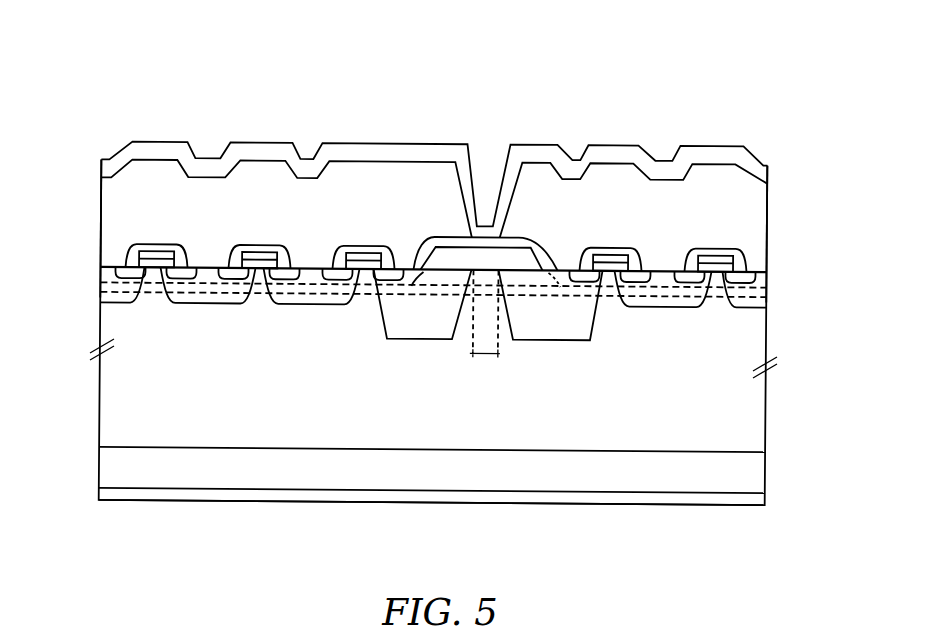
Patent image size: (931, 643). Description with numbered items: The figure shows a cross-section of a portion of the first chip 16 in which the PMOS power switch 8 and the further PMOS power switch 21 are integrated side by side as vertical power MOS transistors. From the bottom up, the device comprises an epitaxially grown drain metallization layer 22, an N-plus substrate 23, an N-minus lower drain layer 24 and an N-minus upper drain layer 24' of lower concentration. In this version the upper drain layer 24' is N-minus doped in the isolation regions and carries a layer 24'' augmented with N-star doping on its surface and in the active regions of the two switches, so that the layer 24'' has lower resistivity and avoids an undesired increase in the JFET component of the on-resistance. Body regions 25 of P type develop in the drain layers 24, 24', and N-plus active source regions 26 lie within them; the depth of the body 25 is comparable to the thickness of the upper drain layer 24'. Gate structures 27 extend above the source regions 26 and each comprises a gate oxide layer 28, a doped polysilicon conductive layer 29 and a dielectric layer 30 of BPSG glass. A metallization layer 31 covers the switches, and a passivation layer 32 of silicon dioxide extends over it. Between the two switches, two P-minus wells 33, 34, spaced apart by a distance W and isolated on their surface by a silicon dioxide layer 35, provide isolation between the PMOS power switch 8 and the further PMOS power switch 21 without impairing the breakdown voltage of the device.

The PMOS power switch 8 is at (278, 104).
The first chip 16 is at (778, 428).
The further PMOS power switch 21 is at (628, 96).
The drain metallization layer 22 is at (467, 500).
The substrate 23 is at (410, 488).
The lower drain layer 24 is at (475, 338).
The upper drain layer 24' is at (433, 318).
The augmented layer 24'' is at (395, 264).
The body region 25 is at (207, 303).
The active source region 26 is at (163, 298).
The gate structure 27 is at (153, 234).
The gate oxide layer 28 is at (261, 272).
The doped polysilicon conductive layer 29 is at (173, 243).
The dielectric layer 30 is at (284, 246).
The metallization layer 31 is at (337, 223).
The passivation layer 32 is at (200, 156).
The P-type well 33 is at (452, 325).
The P-type well 34 is at (550, 333).
The silicon dioxide layer 35 is at (449, 270).